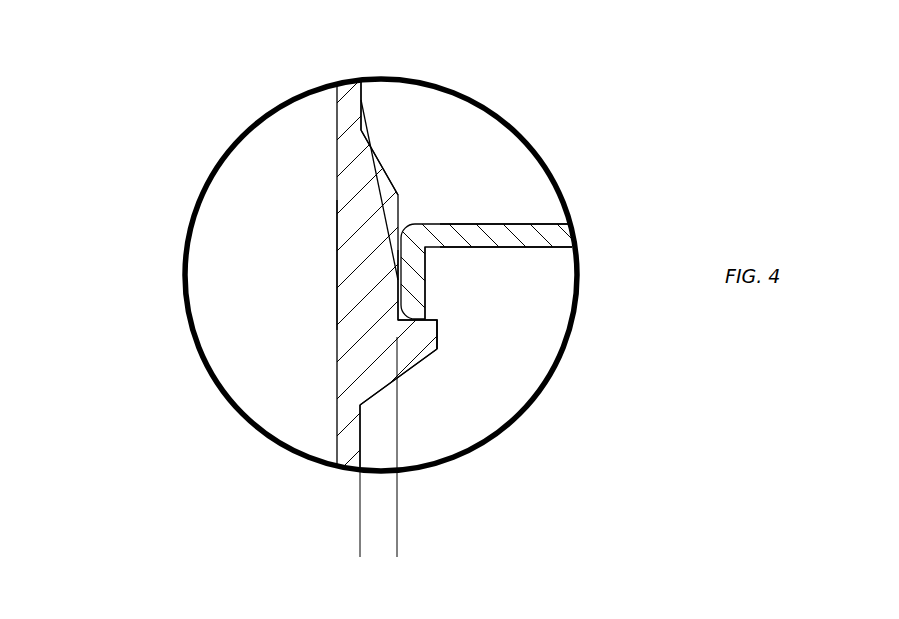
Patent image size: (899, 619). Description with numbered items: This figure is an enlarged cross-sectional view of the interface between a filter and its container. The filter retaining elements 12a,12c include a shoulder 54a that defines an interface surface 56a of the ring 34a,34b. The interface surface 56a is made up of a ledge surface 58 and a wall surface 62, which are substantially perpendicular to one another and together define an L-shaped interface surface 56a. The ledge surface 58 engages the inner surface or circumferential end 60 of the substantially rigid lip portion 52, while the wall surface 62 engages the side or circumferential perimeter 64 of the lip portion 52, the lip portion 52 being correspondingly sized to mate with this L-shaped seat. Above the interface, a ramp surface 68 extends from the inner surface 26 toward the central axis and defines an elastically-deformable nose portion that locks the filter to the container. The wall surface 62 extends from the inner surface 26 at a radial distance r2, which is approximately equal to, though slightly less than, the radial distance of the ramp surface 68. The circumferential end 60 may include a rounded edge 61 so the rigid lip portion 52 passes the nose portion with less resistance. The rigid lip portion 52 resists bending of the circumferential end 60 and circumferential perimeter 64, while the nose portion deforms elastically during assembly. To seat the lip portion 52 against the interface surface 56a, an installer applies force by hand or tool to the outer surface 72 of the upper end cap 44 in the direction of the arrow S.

The filter retaining elements 12a,12c is at (320, 312).
The ring 34a,34b is at (320, 263).
The interface surface 56a is at (388, 263).
The ramp surface 68 is at (373, 157).
The inner surface 26 is at (361, 102).
The wall surface 62 is at (400, 300).
The rounded edge 61 is at (397, 335).
The ledge surface 58 is at (415, 325).
The shoulder 54a is at (417, 372).
The substantially rigid lip portion 52 is at (430, 217).
The outer surface 72 is at (502, 224).
The upper end cap 44 is at (535, 217).
The circumferential perimeter 64 is at (425, 257).
The circumferential end 60 is at (422, 302).
The arrow S is at (478, 190).
The radial distance r2 is at (322, 541).